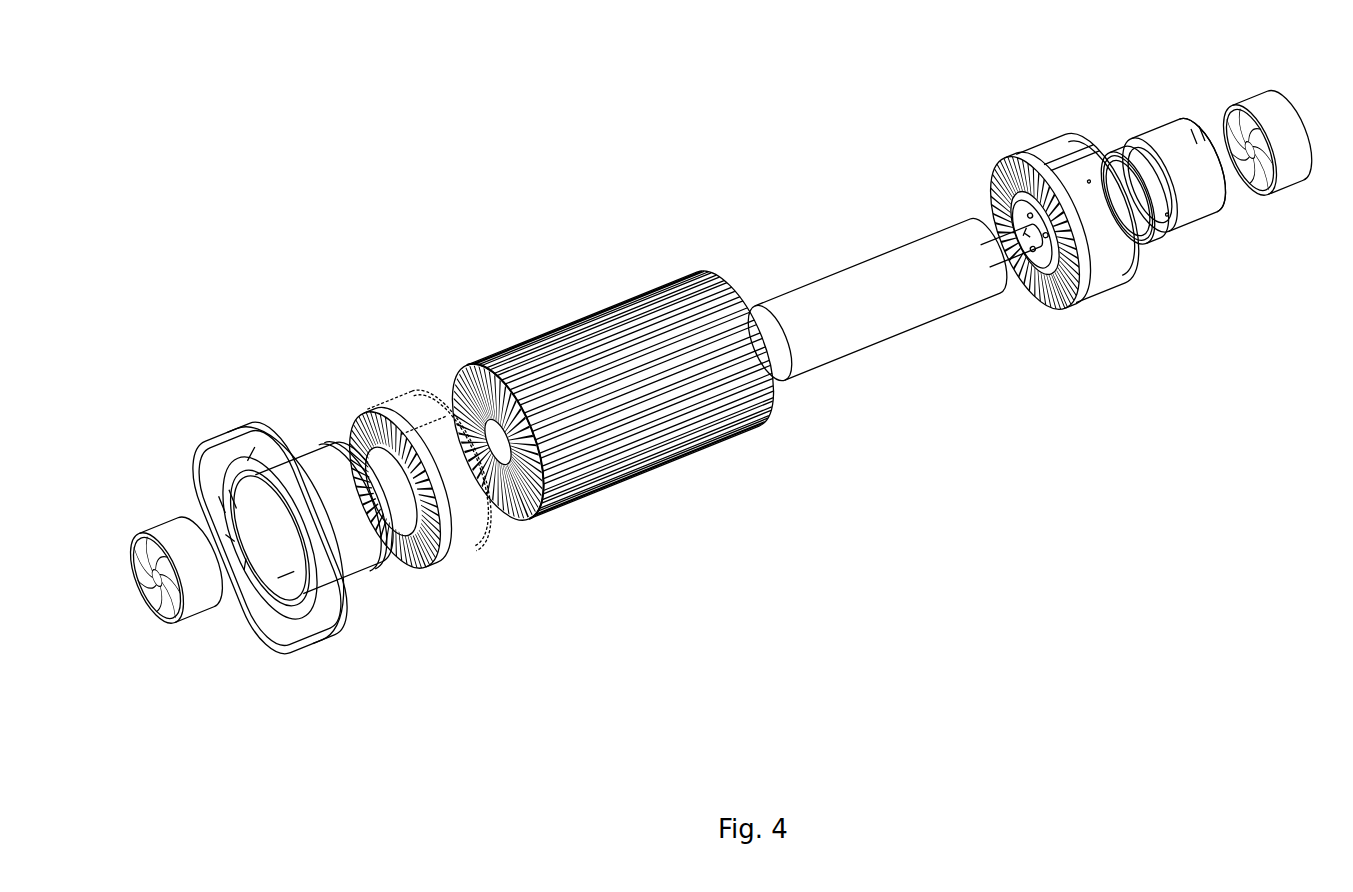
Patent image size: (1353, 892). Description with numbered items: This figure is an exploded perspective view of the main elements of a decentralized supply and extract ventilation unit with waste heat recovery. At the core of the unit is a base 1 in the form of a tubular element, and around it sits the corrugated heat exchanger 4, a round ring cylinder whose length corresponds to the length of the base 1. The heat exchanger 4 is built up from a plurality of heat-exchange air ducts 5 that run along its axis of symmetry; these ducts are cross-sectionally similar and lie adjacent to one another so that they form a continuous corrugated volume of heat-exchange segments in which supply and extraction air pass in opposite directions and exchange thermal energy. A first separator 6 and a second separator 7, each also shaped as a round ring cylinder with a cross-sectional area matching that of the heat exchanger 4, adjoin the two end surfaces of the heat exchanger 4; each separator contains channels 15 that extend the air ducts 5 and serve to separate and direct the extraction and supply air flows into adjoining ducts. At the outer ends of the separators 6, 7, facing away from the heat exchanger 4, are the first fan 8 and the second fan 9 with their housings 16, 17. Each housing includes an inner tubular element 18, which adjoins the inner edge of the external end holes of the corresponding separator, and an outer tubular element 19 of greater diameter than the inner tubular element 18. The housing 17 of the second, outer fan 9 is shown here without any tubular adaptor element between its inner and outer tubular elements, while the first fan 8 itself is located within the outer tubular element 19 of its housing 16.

The base 1 is at (897, 330).
The corrugated heat exchanger 4 is at (613, 403).
The heat-exchange air ducts 5 is at (488, 402).
The first separator 6 is at (452, 505).
The second separator 7 is at (1091, 244).
The first fan 8 is at (207, 624).
The second fan 9 is at (1276, 161).
The channels of the separator 15 is at (700, 331).
The housing of the first fan 16 is at (302, 536).
The housing of the second fan 17 is at (1224, 212).
The inner tubular element 18 is at (708, 305).
The outer tubular element 19 is at (706, 315).